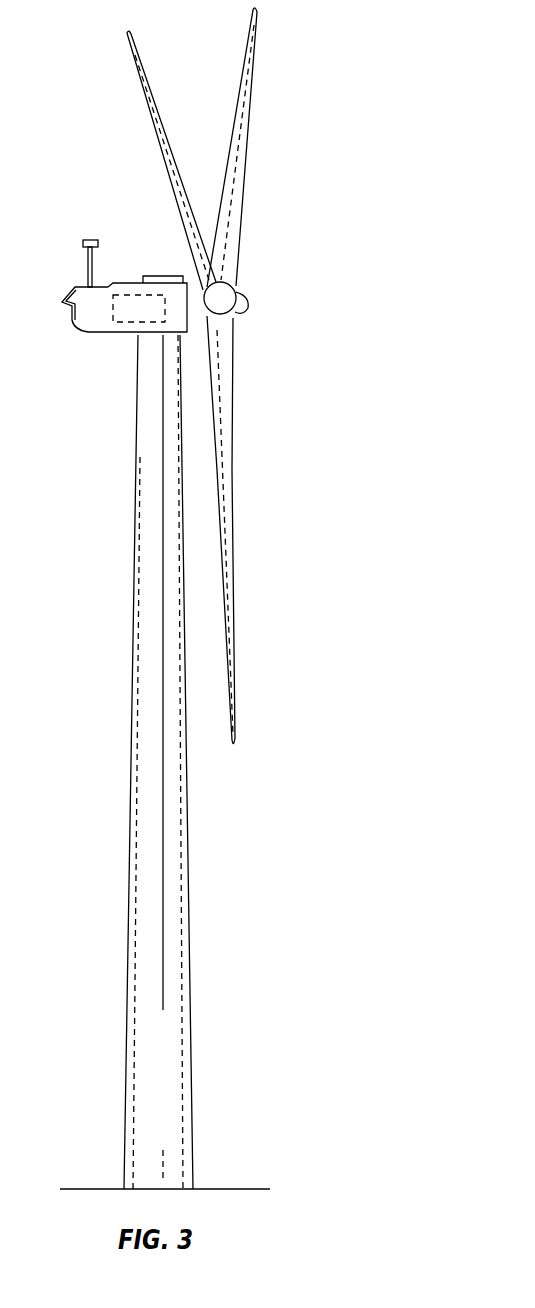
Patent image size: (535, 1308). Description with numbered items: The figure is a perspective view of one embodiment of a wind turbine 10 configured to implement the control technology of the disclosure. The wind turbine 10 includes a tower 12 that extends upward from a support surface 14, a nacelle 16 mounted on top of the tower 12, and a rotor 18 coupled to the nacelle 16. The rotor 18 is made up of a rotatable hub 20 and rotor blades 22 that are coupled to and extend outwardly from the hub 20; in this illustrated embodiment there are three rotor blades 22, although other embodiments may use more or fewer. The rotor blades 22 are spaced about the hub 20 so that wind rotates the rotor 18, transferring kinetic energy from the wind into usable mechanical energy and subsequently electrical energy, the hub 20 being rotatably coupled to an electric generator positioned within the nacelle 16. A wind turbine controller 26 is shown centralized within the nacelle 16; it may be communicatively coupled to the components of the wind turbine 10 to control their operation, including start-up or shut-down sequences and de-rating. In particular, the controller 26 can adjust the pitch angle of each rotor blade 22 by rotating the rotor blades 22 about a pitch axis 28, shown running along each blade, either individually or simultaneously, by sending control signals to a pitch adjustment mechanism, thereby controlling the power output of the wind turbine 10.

The wind turbine 10 is at (372, 147).
The tower 12 is at (168, 832).
The support surface 14 is at (107, 1189).
The nacelle 16 is at (103, 318).
The rotor 18 is at (249, 288).
The rotatable hub 20 is at (247, 312).
The rotor blade 22 is at (153, 100).
The wind turbine controller 26 is at (133, 278).
The pitch axis 28 is at (170, 173).